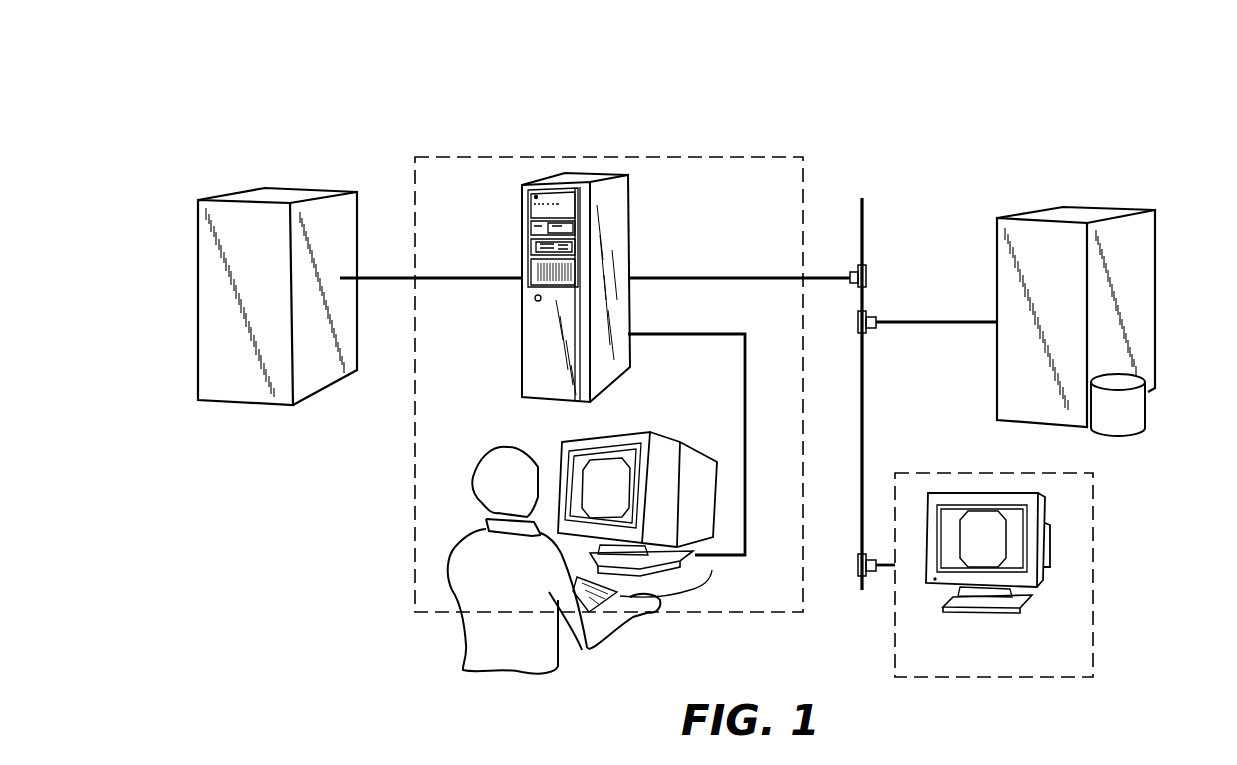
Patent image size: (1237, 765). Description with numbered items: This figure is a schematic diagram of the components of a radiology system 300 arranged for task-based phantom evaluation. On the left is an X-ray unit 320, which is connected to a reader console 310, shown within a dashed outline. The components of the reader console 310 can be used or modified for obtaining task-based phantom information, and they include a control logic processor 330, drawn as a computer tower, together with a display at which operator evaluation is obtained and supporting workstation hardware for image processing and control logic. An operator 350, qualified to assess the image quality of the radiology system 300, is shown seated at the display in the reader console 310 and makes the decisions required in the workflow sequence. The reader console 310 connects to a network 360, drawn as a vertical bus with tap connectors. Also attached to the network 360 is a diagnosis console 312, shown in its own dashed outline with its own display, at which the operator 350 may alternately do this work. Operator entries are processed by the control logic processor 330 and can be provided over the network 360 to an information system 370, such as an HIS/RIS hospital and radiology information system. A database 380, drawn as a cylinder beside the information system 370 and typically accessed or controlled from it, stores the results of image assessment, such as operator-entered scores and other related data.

The radiology system 300 is at (201, 68).
The reader console 310 is at (645, 156).
The diagnosis console 312 is at (908, 679).
The X-ray unit 320 is at (273, 187).
The control logic processor 330 is at (632, 238).
The operator 350 is at (493, 447).
The network 360 is at (864, 225).
The information system 370 is at (1087, 208).
The database 380 is at (1153, 413).